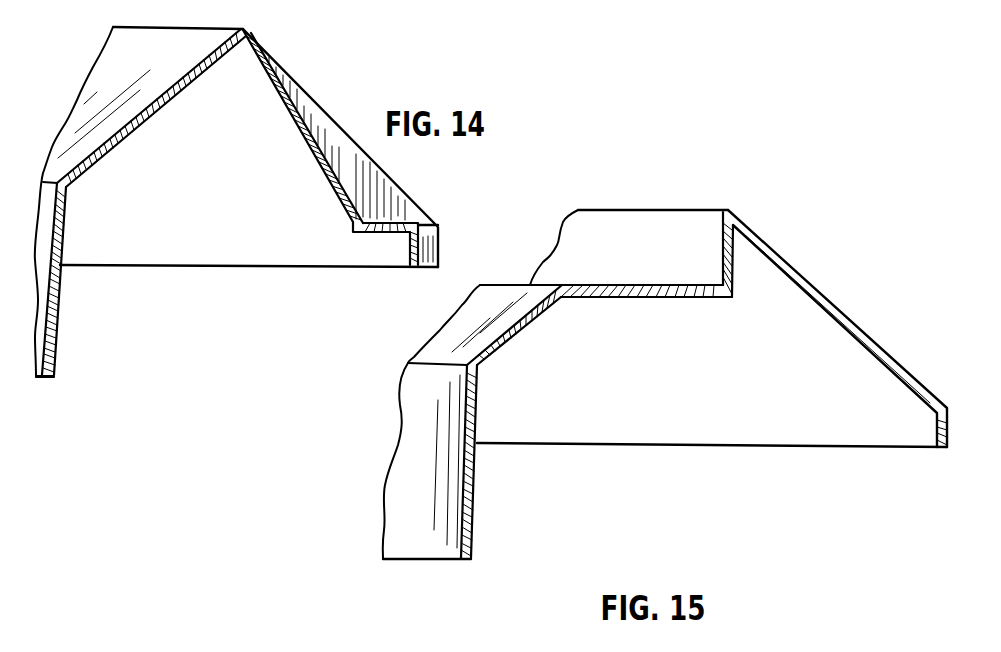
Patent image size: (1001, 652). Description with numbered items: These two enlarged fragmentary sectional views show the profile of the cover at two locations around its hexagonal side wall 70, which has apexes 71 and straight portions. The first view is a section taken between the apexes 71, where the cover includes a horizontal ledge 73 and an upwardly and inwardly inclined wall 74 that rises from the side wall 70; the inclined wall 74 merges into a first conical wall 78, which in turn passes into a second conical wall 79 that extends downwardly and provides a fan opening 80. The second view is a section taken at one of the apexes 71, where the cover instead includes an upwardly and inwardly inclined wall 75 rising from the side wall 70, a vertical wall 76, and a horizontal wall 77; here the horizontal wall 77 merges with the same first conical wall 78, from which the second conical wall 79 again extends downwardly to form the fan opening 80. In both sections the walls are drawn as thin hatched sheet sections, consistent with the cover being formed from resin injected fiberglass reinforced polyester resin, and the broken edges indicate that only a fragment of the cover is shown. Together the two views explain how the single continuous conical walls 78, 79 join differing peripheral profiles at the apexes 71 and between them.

In FIG. 14, the hexagonal side wall 70 is at (408, 250).
In FIG. 15, the hexagonal side wall 70 is at (940, 430).
In FIG. 14, the apexes 71 is at (507, 0).
In FIG. 14, the horizontal ledge 73 is at (393, 220).
In FIG. 14, the upwardly and inwardly inclined wall 74 is at (310, 157).
In FIG. 15, the upwardly and inwardly inclined wall 75 is at (853, 323).
In FIG. 15, the vertical wall 76 is at (723, 250).
In FIG. 15, the horizontal wall 77 is at (612, 285).
In FIG. 14, the first conical wall 78 is at (148, 115).
In FIG. 15, the first conical wall 78 is at (518, 333).
In FIG. 14, the second conical wall 79 is at (58, 332).
In FIG. 15, the second conical wall 79 is at (475, 503).
In FIG. 14, the fan opening 80 is at (36, 380).
In FIG. 15, the fan opening 80 is at (430, 550).